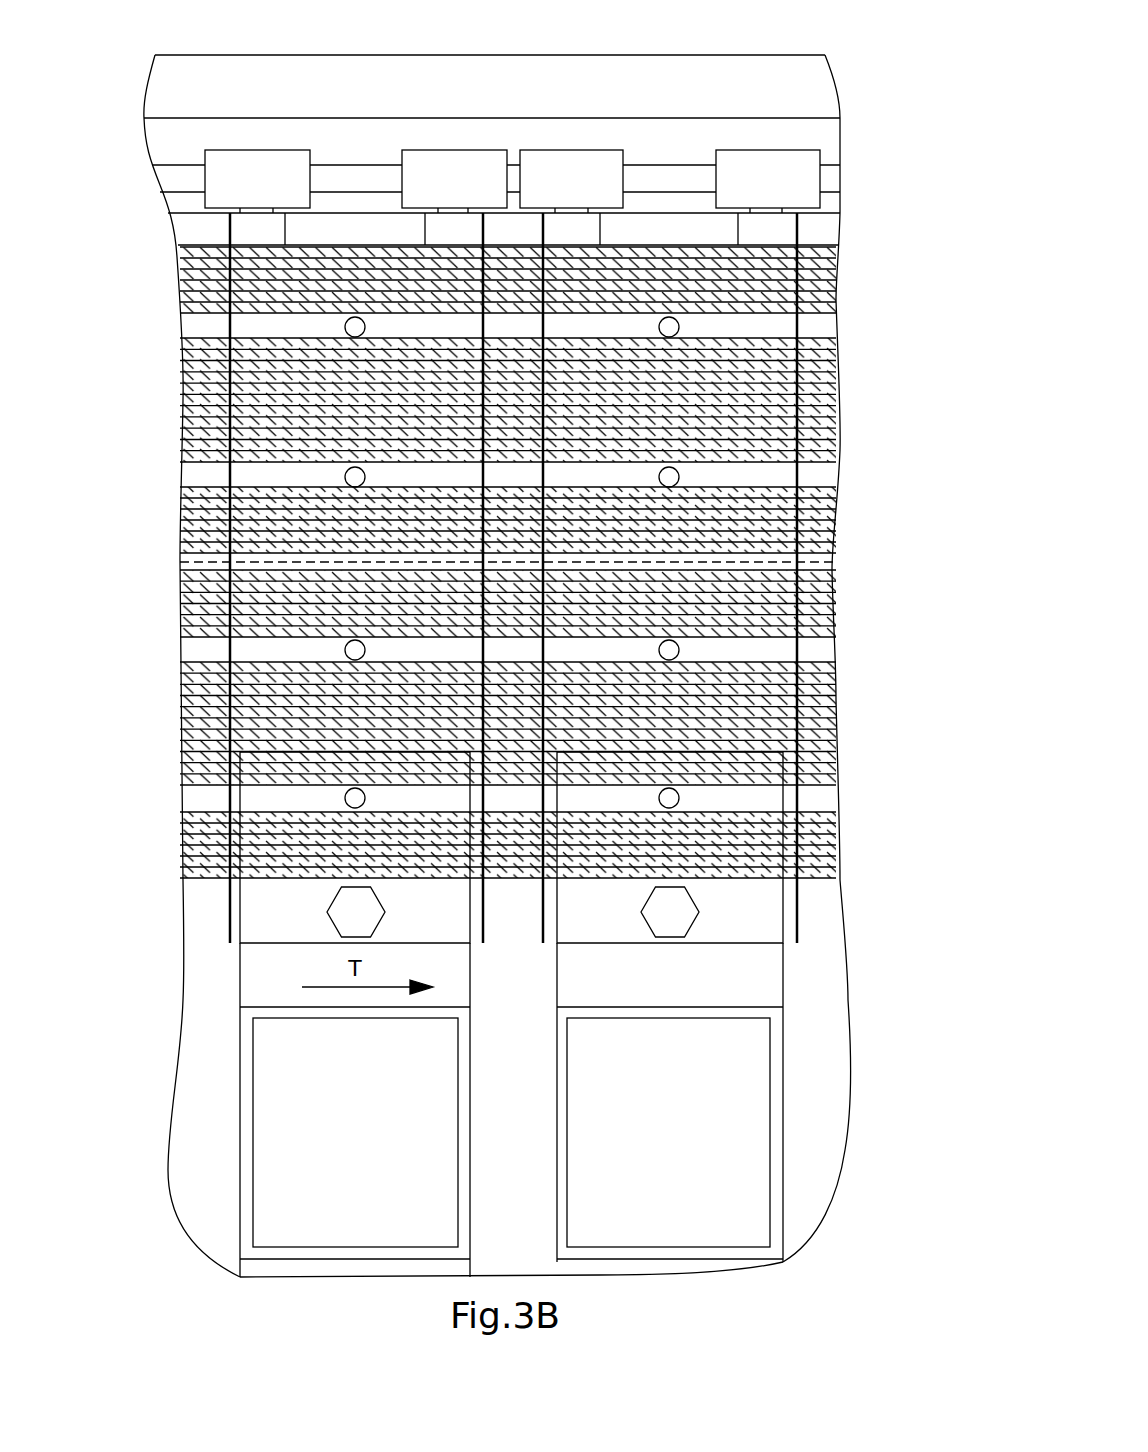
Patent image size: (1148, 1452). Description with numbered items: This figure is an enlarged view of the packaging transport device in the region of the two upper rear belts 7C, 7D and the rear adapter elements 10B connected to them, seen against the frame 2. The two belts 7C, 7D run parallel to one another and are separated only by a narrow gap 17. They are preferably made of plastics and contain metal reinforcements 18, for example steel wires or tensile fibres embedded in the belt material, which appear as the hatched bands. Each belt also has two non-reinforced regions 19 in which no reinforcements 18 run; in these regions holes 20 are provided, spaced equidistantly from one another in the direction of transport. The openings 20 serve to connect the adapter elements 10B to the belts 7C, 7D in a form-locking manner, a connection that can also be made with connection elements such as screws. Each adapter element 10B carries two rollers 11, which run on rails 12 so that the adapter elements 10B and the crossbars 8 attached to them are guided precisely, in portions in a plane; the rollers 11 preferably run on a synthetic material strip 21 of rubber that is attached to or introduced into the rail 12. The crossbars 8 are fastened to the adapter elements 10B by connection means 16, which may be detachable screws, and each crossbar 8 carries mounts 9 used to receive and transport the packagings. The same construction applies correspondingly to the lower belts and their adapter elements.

The frame 2 is at (316, 85).
The rollers 11 is at (568, 172).
The rails 12 is at (672, 170).
The synthetic material strip 21 is at (180, 177).
The belt 7D is at (168, 247).
The belt 7C is at (168, 570).
The rear adapter element 10B is at (770, 476).
The gap 17 is at (820, 563).
The reinforcements 18 is at (828, 752).
The non-reinforced regions 19 is at (815, 323).
The holes 20 is at (680, 327).
The connection means 16 is at (678, 912).
The crossbar 8 is at (725, 978).
The mounts 9 is at (725, 1140).